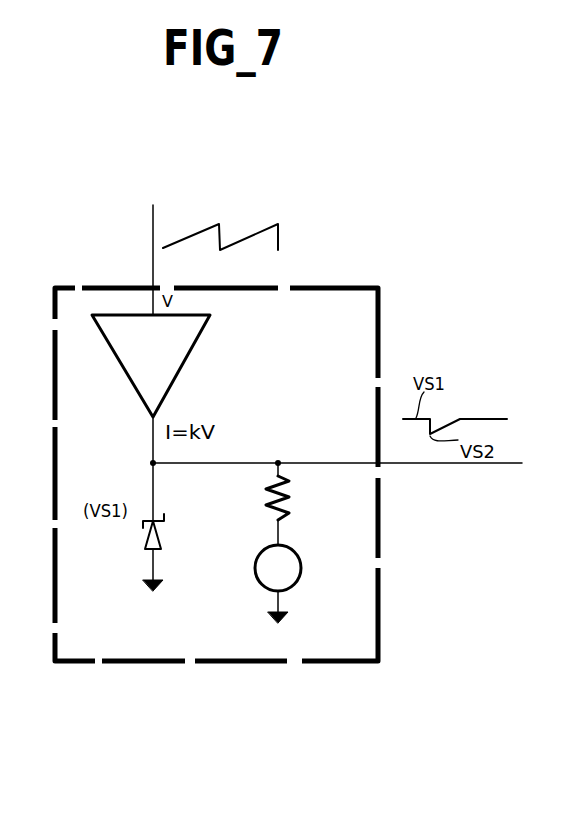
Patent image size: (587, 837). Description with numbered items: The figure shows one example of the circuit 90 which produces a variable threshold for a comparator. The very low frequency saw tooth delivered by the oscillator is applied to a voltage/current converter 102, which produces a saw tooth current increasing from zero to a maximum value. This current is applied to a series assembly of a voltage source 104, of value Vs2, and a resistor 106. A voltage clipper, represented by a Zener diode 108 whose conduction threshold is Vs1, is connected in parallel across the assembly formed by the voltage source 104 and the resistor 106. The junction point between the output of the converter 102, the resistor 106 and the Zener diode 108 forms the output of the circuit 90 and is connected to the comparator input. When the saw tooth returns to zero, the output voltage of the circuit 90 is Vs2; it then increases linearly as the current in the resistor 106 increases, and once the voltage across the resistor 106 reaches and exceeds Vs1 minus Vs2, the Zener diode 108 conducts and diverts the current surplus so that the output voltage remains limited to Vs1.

The circuit 90 is at (338, 288).
The voltage/current converter 102 is at (183, 372).
The voltage source 104 is at (301, 565).
The resistor 106 is at (289, 510).
The Zener diode 108 is at (165, 531).